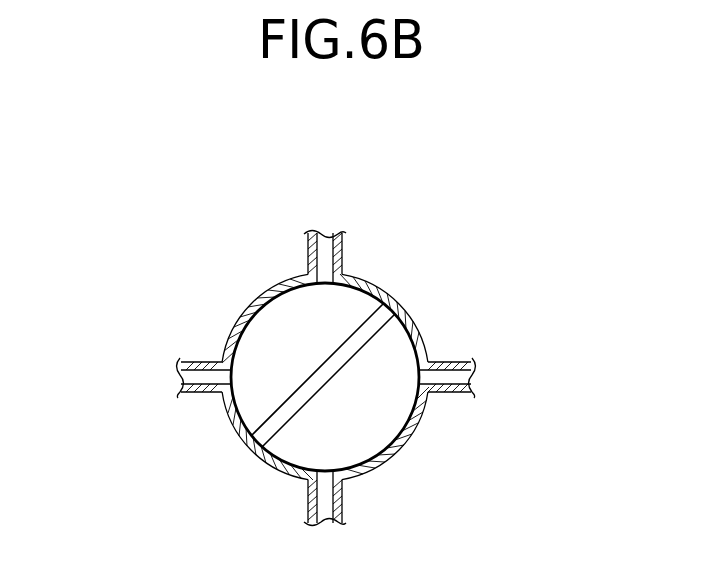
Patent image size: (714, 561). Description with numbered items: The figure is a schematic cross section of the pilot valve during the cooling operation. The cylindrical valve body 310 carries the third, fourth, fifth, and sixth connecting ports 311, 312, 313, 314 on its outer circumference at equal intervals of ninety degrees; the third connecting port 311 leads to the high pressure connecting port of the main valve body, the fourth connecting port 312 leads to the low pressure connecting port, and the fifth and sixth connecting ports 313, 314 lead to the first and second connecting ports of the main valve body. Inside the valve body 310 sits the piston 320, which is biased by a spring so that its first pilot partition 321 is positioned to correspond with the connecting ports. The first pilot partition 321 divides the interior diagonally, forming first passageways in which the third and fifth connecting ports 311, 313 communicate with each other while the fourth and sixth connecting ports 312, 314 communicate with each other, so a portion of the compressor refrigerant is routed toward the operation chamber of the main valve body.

The cylindrical valve body 310 is at (243, 308).
The third connecting port 311 is at (322, 238).
The fourth connecting port 312 is at (330, 502).
The fifth connecting port 313 is at (178, 380).
The sixth connecting port 314 is at (472, 378).
The piston 320 is at (392, 358).
The first pilot partition 321 is at (372, 325).